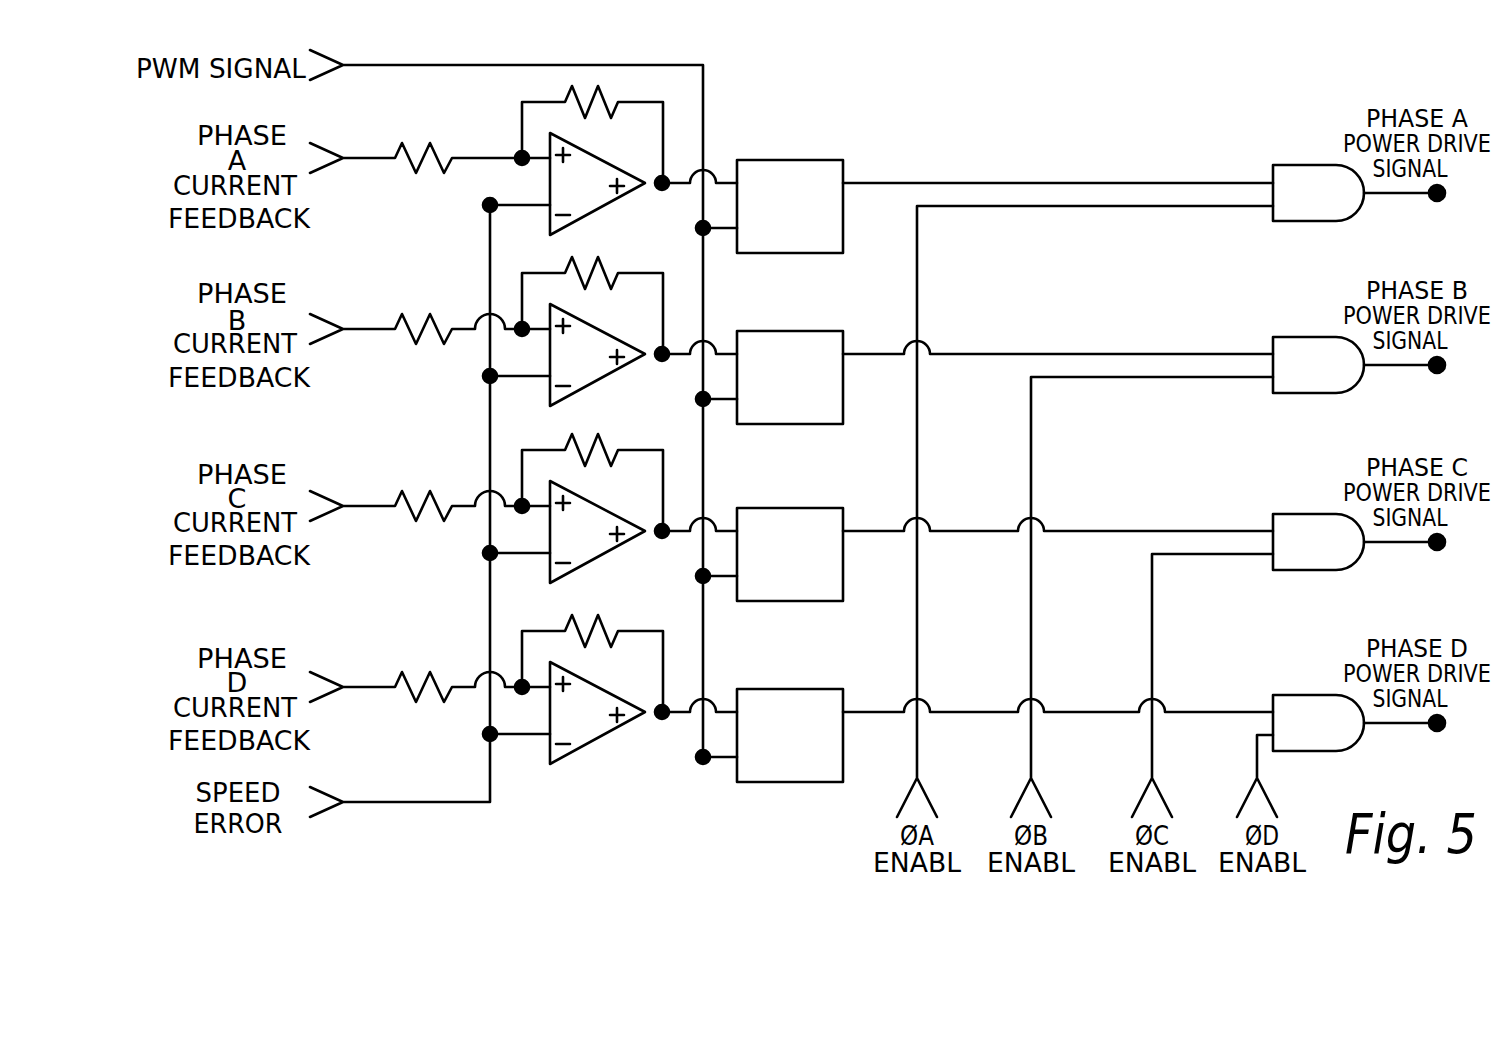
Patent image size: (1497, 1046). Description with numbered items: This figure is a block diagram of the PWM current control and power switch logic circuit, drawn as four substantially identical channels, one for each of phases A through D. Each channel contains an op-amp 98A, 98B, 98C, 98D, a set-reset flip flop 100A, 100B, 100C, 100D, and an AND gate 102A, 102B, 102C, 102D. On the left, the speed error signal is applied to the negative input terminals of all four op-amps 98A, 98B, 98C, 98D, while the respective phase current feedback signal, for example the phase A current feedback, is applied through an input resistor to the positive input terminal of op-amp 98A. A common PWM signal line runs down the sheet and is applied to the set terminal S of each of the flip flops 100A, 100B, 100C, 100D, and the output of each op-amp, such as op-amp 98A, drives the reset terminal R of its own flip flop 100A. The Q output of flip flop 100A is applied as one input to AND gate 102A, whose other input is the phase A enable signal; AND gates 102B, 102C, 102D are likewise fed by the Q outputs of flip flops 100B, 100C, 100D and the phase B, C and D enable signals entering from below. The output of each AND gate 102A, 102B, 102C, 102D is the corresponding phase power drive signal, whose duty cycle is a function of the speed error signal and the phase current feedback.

The op-amp 98A is at (580, 220).
The op-amp 98B is at (580, 391).
The op-amp 98C is at (580, 568).
The op-amp 98D is at (580, 749).
The set-reset flip flop 100A is at (782, 160).
The set-reset flip flop 100B is at (782, 331).
The set-reset flip flop 100C is at (782, 508).
The set-reset flip flop 100D is at (782, 689).
The AND gate 102A is at (1313, 165).
The AND gate 102B is at (1313, 337).
The AND gate 102C is at (1313, 514).
The AND gate 102D is at (1313, 695).